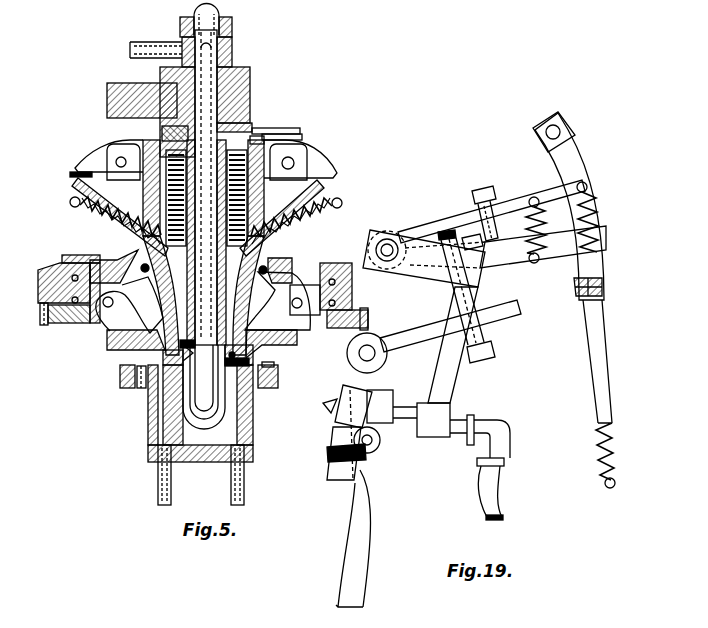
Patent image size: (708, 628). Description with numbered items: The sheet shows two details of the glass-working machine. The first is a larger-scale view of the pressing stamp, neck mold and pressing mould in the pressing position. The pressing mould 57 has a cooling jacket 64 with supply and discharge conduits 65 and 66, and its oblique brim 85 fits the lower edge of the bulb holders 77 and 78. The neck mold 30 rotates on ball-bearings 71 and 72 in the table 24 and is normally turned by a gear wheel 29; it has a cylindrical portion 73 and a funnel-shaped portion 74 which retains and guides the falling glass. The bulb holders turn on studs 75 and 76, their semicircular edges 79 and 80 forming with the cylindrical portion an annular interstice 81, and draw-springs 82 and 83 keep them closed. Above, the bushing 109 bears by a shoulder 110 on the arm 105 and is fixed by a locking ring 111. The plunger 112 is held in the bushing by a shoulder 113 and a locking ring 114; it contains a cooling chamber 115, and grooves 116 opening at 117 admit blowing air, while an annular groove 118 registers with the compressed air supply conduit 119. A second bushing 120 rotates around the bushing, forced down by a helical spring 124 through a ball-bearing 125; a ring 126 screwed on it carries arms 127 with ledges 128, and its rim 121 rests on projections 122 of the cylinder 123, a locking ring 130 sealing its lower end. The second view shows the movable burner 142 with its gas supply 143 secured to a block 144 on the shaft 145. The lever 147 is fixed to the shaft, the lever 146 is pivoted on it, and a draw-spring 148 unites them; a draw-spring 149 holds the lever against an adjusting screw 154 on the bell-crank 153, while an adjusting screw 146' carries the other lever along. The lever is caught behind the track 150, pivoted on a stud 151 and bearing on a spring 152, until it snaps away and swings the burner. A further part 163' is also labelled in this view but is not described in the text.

In FIG. 5, the cooling chamber 115 is at (197, 17).
In FIG. 5, the locking ring 114 is at (232, 25).
In FIG. 5, the compressed air supply conduit 119 is at (150, 42).
In FIG. 5, the annular groove 118 is at (232, 50).
In FIG. 5, the grooves 116 is at (235, 70).
In FIG. 5, the locking ring 111 is at (250, 82).
In FIG. 5, the arm 105 is at (118, 106).
In FIG. 5, the shoulder 110 is at (162, 128).
In FIG. 5, the bushing 109 is at (245, 127).
In FIG. 5, the ball-bearing 125 is at (262, 136).
In FIG. 5, the rim 121 is at (300, 131).
In FIG. 5, the second bushing 120 is at (302, 137).
In FIG. 5, the ledges 128 is at (322, 170).
In FIG. 5, the arms 127 is at (288, 169).
In FIG. 5, the ring 126 is at (70, 176).
In FIG. 5, the helical spring 124 is at (166, 200).
In FIG. 5, the cylinder 123 is at (247, 212).
In FIG. 5, the neck mold 30 is at (88, 214).
In FIG. 5, the funnel-shaped portion 74 is at (90, 190).
In FIG. 5, the projections 122 is at (105, 262).
In FIG. 5, the draw-spring 83 is at (310, 232).
In FIG. 5, the draw-spring 82 is at (62, 258).
In FIG. 5, the ball-bearing 71 is at (52, 283).
In FIG. 5, the ball-bearing 72 is at (48, 310).
In FIG. 5, the gear wheel 29 is at (44, 325).
In FIG. 5, the stud 75 is at (108, 312).
In FIG. 5, the cylindrical portion 73 is at (157, 310).
In FIG. 5, the bulb holder 77 is at (110, 343).
In FIG. 5, the opening 117 is at (180, 345).
In FIG. 5, the stud 76 is at (300, 309).
In FIG. 5, the table 24 is at (352, 290).
In FIG. 5, the bulb holder 78 is at (285, 345).
In FIG. 5, the semicircular edge 79 is at (148, 400).
In FIG. 5, the cooling jacket 64 is at (163, 420).
In FIG. 5, the oblique brim 85 is at (120, 375).
In FIG. 5, the pressing mould 57 is at (141, 388).
In FIG. 5, the supply conduit 65 is at (158, 485).
In FIG. 5, the discharge conduit 66 is at (244, 485).
In FIG. 5, the pressing stamp or plunger 112 is at (205, 405).
In FIG. 5, the annular interstice 81 is at (172, 372).
In FIG. 5, the shoulder 113 is at (249, 362).
In FIG. 5, the semicircular edge 80 is at (278, 378).
In FIG. 5, the locking ring 130 is at (270, 388).
In FIG. 19, the track 150 is at (580, 160).
In FIG. 19, the spring 152 is at (560, 130).
In FIG. 19, the stud 151 is at (602, 290).
In FIG. 19, the draw-spring 149 is at (596, 338).
In FIG. 19, the draw-spring 148 is at (540, 232).
In FIG. 19, the lever 146 is at (491, 215).
In FIG. 19, the adjusting screw 146' is at (494, 204).
In FIG. 19, the lever 147 is at (520, 262).
In FIG. 19, the block 144 is at (455, 274).
In FIG. 19, the shaft 145 is at (389, 244).
In FIG. 19, the adjusting screw 154 is at (491, 350).
In FIG. 19, the bell-crank 153 is at (414, 348).
In FIG. 19, the gas supply 143 is at (495, 500).
In FIG. 19, the burner 142 is at (334, 470).
In FIG. 19, the lever 163' is at (375, 538).